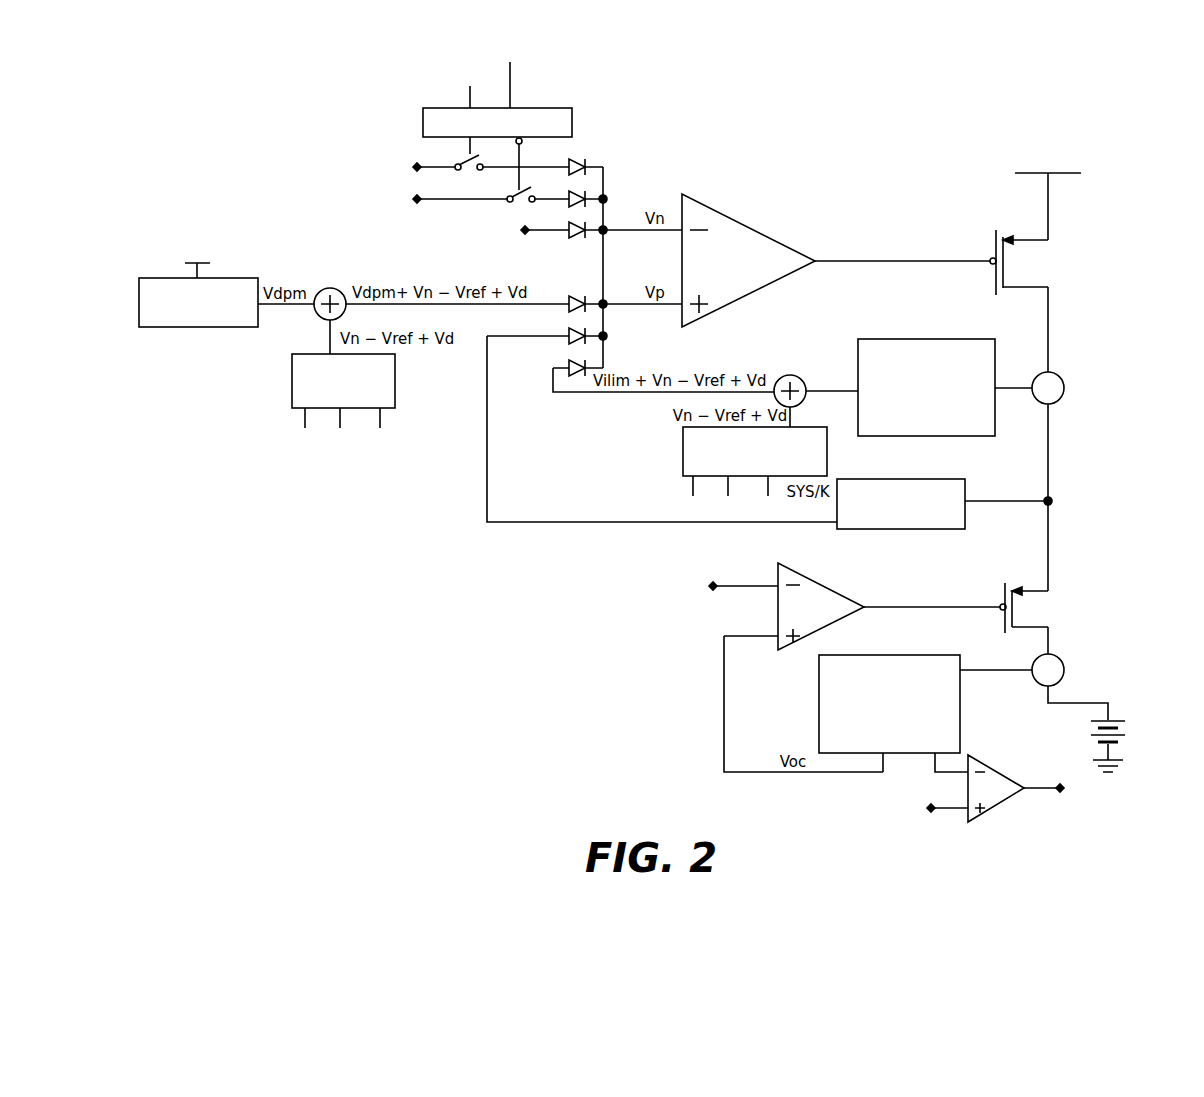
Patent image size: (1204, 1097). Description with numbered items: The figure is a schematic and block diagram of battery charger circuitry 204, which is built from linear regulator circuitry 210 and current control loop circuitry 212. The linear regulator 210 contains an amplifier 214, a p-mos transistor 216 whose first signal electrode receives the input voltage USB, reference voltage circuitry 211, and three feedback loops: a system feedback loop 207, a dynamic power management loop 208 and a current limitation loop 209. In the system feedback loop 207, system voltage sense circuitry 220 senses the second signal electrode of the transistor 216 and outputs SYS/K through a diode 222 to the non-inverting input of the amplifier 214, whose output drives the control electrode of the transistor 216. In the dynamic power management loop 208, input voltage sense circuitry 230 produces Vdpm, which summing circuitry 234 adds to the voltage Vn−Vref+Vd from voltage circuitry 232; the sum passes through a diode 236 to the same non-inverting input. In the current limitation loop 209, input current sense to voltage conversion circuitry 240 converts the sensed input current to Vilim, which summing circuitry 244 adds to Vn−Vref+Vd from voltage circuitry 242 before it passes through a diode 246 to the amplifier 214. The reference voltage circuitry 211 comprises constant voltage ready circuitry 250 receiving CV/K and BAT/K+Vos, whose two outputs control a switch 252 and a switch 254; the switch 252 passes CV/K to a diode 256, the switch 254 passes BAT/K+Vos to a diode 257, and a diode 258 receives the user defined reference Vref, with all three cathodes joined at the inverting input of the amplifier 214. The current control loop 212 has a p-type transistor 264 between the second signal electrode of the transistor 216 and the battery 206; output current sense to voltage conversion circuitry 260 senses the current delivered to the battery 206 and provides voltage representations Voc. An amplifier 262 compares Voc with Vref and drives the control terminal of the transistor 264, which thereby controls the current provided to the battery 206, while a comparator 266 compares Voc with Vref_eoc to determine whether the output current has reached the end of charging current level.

The battery charger circuitry 204 is at (1102, 208).
The battery 206 is at (1132, 708).
The system feedback loop 207 is at (612, 466).
The dynamic power management loop 208 is at (318, 272).
The current limitation loop 209 is at (840, 339).
The linear regulator circuitry 210 is at (900, 182).
The reference voltage circuitry 211 is at (640, 135).
The current control loop circuitry 212 is at (1112, 645).
The amplifier 214 is at (745, 225).
The transistor 216 is at (993, 250).
The system voltage sense circuitry 220 is at (930, 479).
The diode 222 is at (578, 330).
The input voltage sense circuitry 230 is at (195, 327).
The voltage circuitry 232 is at (290, 386).
The summing circuitry 234 is at (342, 290).
The diode 236 is at (575, 297).
The input current sense to voltage conversion circuitry 240 is at (928, 339).
The voltage circuitry 242 is at (827, 461).
The summing circuitry 244 is at (780, 378).
The diode 246 is at (575, 362).
The constant voltage ready circuitry 250 is at (546, 108).
The switch 252 is at (456, 164).
The switch 254 is at (508, 196).
The diode 256 is at (578, 162).
The diode 257 is at (580, 202).
The diode 258 is at (580, 241).
The output current sense to voltage conversion circuitry 260 is at (905, 656).
The amplifier 262 is at (822, 585).
The p-type transistor 264 is at (1005, 598).
The comparator 266 is at (985, 765).